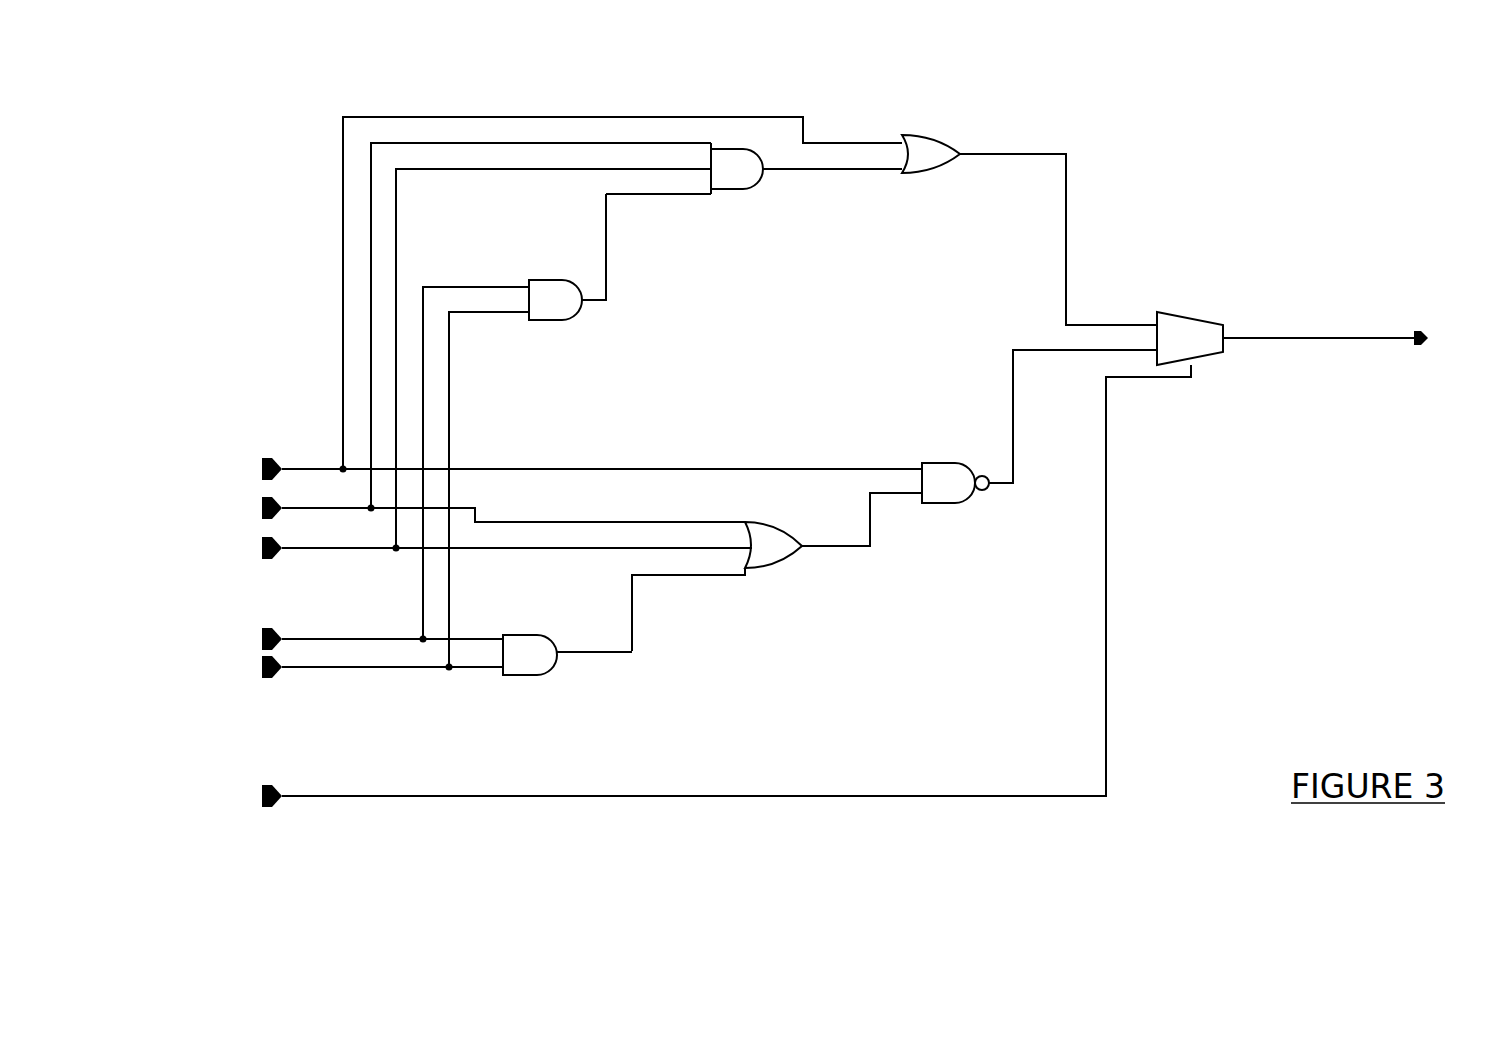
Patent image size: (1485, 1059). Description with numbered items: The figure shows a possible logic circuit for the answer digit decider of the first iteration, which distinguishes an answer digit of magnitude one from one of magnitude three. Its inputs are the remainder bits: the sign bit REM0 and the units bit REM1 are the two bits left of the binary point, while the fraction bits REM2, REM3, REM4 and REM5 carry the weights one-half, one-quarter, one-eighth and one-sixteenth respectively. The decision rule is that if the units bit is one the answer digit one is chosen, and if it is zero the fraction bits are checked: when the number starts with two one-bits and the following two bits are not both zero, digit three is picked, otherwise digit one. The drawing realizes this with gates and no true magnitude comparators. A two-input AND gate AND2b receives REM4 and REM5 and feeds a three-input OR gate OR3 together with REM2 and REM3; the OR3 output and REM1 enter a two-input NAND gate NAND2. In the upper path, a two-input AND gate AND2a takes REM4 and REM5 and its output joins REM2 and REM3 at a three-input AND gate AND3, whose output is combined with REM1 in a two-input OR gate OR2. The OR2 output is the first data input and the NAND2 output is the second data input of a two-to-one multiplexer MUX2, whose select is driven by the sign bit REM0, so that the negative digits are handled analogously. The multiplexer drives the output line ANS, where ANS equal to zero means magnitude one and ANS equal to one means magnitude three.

The sign bit REM0 is at (669, 592).
The units bit REM1 is at (535, 302).
The fraction bit of weight one-half REM2 is at (446, 335).
The fraction bit of weight one-quarter REM3 is at (450, 368).
The fraction bit of weight one-eighth REM4 is at (338, 472).
The fraction bit of weight one-sixteenth REM5 is at (338, 504).
The three-input AND gate AND3 is at (754, 192).
The two-input AND gate (upper) AND2a is at (557, 280).
The two-input AND gate (lower) AND2b is at (556, 632).
The two-input OR gate OR2 is at (1021, 230).
The three-input OR gate OR3 is at (777, 572).
The two-input NAND gate NAND2 is at (1022, 448).
The two-to-one multiplexer MUX2 is at (1156, 337).
The output line ANS is at (1348, 316).